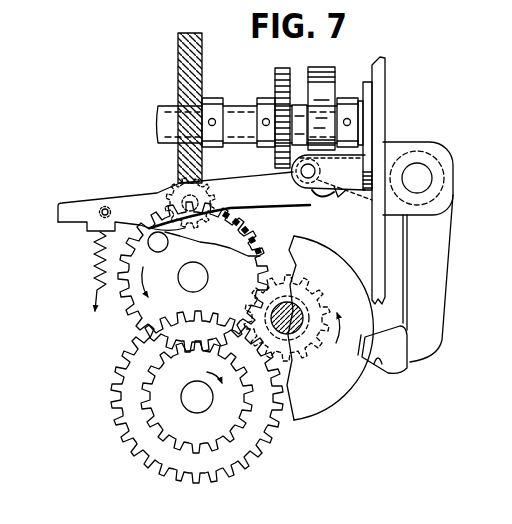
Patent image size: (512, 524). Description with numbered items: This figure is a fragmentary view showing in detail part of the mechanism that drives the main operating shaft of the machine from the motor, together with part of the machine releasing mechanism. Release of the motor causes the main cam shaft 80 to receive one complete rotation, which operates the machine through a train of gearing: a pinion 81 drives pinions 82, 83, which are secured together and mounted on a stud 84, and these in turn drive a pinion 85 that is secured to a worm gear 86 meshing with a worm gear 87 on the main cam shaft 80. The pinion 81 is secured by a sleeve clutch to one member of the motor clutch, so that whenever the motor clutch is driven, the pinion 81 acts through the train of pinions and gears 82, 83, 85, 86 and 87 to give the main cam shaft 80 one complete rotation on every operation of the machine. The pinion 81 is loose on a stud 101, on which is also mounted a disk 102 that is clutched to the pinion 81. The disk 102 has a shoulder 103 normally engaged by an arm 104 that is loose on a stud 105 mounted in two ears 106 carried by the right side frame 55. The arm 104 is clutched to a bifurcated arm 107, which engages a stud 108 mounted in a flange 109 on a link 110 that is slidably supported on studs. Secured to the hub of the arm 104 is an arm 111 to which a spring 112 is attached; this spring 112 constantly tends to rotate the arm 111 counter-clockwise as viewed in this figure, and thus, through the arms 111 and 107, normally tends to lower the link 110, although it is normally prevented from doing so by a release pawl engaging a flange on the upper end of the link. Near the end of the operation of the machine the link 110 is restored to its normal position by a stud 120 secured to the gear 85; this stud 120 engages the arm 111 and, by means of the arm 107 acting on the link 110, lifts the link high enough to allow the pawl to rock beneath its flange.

The right side frame 55 is at (378, 88).
The main cam shaft 80 is at (237, 117).
The pinion 81 is at (288, 300).
The pinion 82 is at (122, 393).
The pinion 83 is at (155, 375).
The stud 84 is at (197, 388).
The pinion 85 is at (140, 307).
The worm gear 86 is at (252, 221).
The worm gear 87 is at (187, 80).
The stud 101 is at (296, 287).
The disk 102 is at (347, 387).
The shoulder 103 is at (382, 363).
The arm 104 is at (432, 237).
The stud 105 is at (432, 178).
The ears 106 is at (456, 134).
The bifurcated arm 107 is at (325, 194).
The stud 108 is at (302, 176).
The flange 109 is at (335, 198).
The link 110 is at (372, 170).
The arm 111 is at (86, 183).
The spring 112 is at (93, 266).
The stud 120 is at (165, 239).